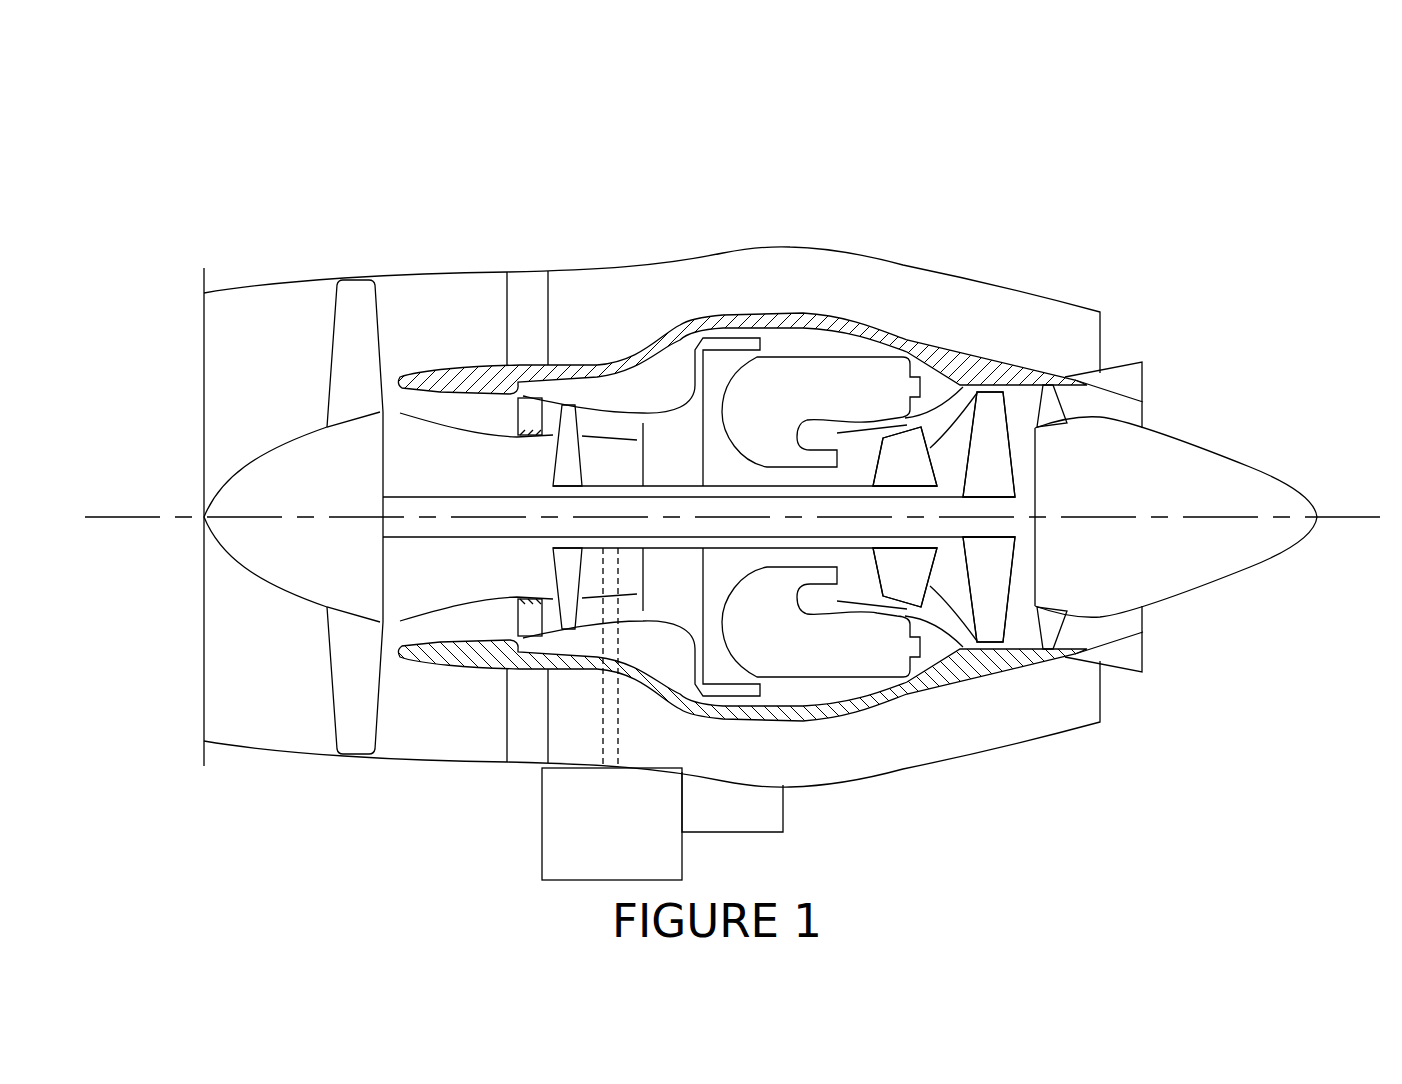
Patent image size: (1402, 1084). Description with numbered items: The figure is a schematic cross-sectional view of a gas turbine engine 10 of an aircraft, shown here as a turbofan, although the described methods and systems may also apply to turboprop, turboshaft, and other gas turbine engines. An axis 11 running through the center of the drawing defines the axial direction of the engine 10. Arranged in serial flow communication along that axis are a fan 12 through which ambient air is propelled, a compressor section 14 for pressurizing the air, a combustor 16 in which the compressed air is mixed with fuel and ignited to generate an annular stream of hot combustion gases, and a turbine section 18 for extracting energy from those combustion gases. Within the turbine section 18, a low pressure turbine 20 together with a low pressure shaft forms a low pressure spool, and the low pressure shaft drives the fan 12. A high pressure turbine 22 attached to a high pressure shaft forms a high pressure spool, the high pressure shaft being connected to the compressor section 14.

The gas turbine engine 10 is at (972, 198).
The axis 11 is at (117, 517).
The fan 12 is at (350, 667).
The compressor section 14 is at (602, 417).
The combustor 16 is at (818, 377).
The turbine section 18 is at (950, 583).
The low pressure turbine 20 is at (987, 402).
The high pressure turbine 22 is at (903, 440).